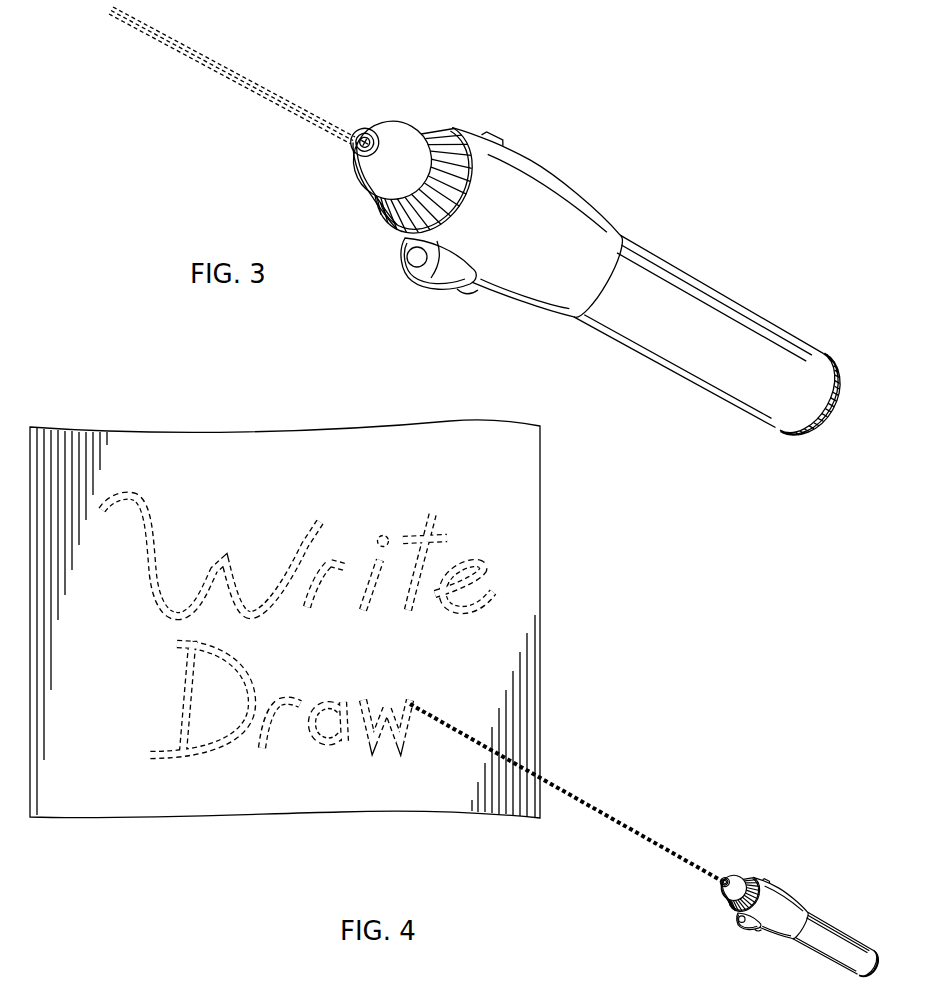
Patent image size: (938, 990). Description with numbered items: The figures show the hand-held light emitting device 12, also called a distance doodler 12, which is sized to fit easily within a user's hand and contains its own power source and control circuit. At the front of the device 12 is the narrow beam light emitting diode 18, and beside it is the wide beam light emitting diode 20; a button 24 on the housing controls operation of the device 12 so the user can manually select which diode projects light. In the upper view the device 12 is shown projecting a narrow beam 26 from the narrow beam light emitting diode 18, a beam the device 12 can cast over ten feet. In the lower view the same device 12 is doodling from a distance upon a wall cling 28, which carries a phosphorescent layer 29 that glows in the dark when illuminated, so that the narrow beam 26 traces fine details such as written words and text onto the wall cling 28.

In FIG. 3, the hand-held light emitting device 12 is at (594, 270).
In FIG. 4, the hand-held light emitting device 12 is at (822, 917).
In FIG. 3, the narrow beam light emitting diode 18 is at (367, 140).
In FIG. 3, the wide beam light emitting diode 20 is at (408, 276).
In FIG. 3, the button 24 is at (490, 132).
In FIG. 3, the narrow beam 26 is at (233, 68).
In FIG. 4, the narrow beam 26 is at (582, 798).
In FIG. 4, the wall cling 28 is at (331, 619).
In FIG. 4, the phosphorescent layer 29 is at (523, 482).